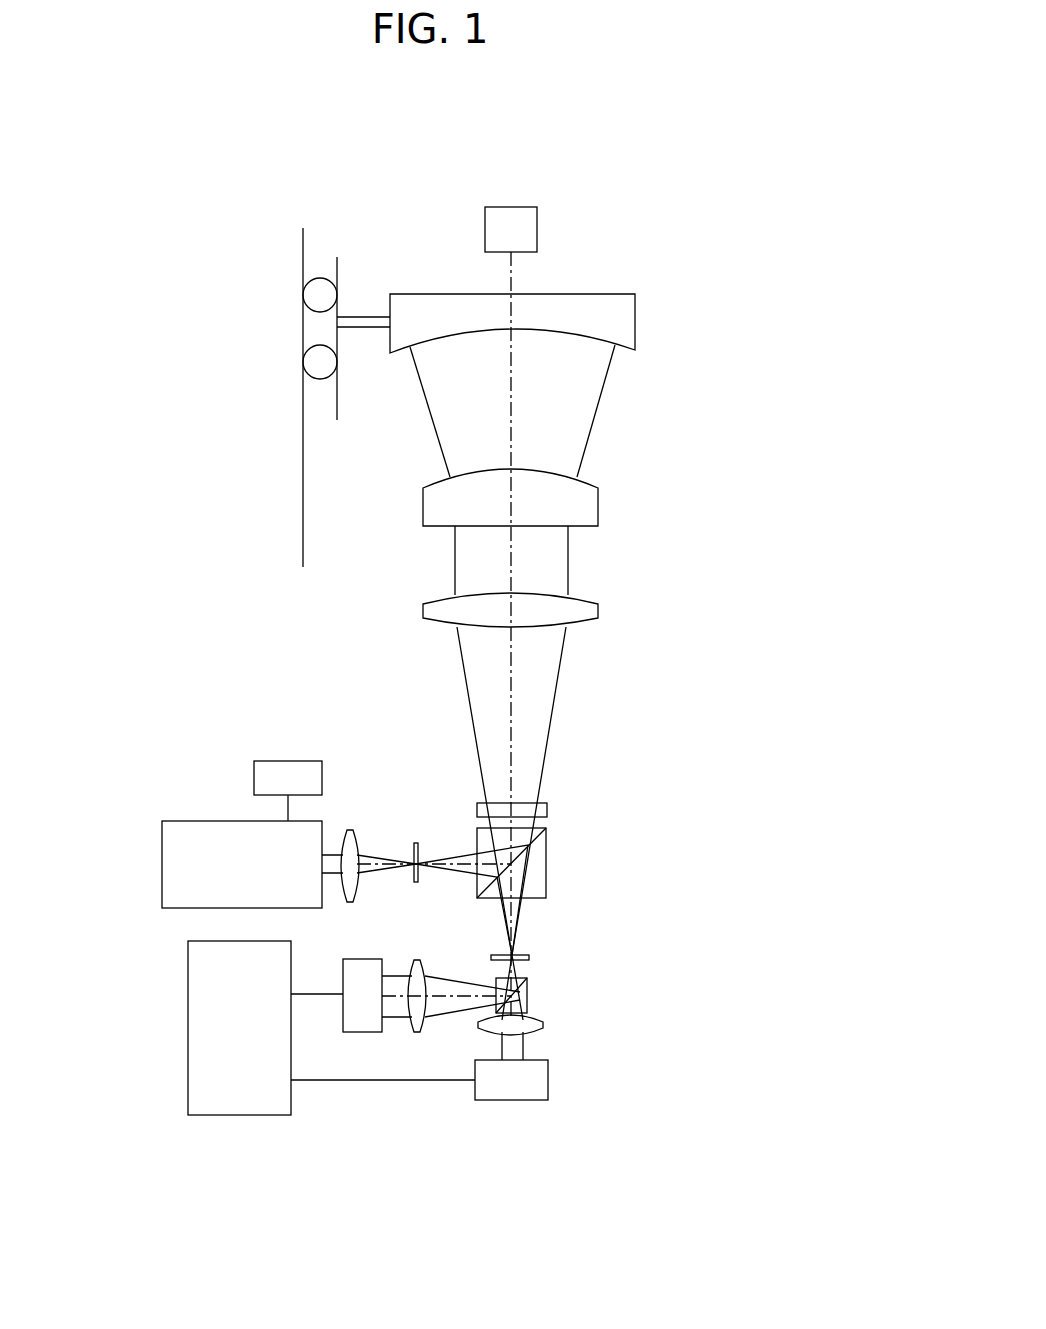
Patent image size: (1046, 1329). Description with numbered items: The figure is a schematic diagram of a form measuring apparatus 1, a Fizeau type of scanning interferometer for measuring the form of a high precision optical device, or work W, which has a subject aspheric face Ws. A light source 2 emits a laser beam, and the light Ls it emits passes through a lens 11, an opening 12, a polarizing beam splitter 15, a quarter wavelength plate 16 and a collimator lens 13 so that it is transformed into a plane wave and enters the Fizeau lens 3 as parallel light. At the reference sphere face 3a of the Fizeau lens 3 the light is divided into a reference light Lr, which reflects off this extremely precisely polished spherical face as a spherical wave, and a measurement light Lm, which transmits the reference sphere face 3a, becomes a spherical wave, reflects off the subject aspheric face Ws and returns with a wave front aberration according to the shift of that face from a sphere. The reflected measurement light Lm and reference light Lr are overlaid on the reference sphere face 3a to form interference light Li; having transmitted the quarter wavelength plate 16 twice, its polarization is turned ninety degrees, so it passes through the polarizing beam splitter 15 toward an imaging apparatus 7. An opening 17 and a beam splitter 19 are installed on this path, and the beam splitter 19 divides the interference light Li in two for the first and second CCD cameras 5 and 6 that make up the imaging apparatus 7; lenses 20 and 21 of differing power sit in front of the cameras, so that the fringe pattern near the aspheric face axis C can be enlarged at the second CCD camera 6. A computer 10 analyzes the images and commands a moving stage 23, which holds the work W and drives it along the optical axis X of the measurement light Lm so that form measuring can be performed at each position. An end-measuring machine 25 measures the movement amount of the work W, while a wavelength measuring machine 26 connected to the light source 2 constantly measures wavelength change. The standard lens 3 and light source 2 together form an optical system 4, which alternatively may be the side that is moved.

The form measuring apparatus 1 is at (524, 133).
The light source 2 is at (218, 828).
The Fizeau lens 3 is at (585, 512).
The reference sphere face 3a is at (585, 475).
The optical system 4 is at (697, 623).
The first CCD camera 5 is at (535, 1082).
The second CCD camera 6 is at (358, 965).
The imaging apparatus 7 is at (516, 1110).
The computer 10 is at (195, 980).
The lens 11 is at (350, 830).
The opening 12 is at (417, 842).
The collimator lens 13 is at (585, 612).
The polarizing beam splitter 15 is at (533, 867).
The quarter wavelength plate 16 is at (538, 807).
The opening 17 is at (525, 955).
The beam splitter 19 is at (520, 995).
The lens 20 is at (533, 1025).
The lens 21 is at (417, 960).
The moving stage 23 is at (303, 292).
The end-measuring machine 25 is at (497, 230).
The wavelength measuring machine 26 is at (272, 767).
The work W is at (600, 300).
The subject aspheric face Ws is at (637, 352).
The aspheric face axis C is at (512, 318).
The optical axis X is at (510, 385).
The measurement light Lm is at (433, 438).
The reference light Lr is at (453, 563).
The light Ls is at (468, 853).
The interference light Li is at (517, 922).